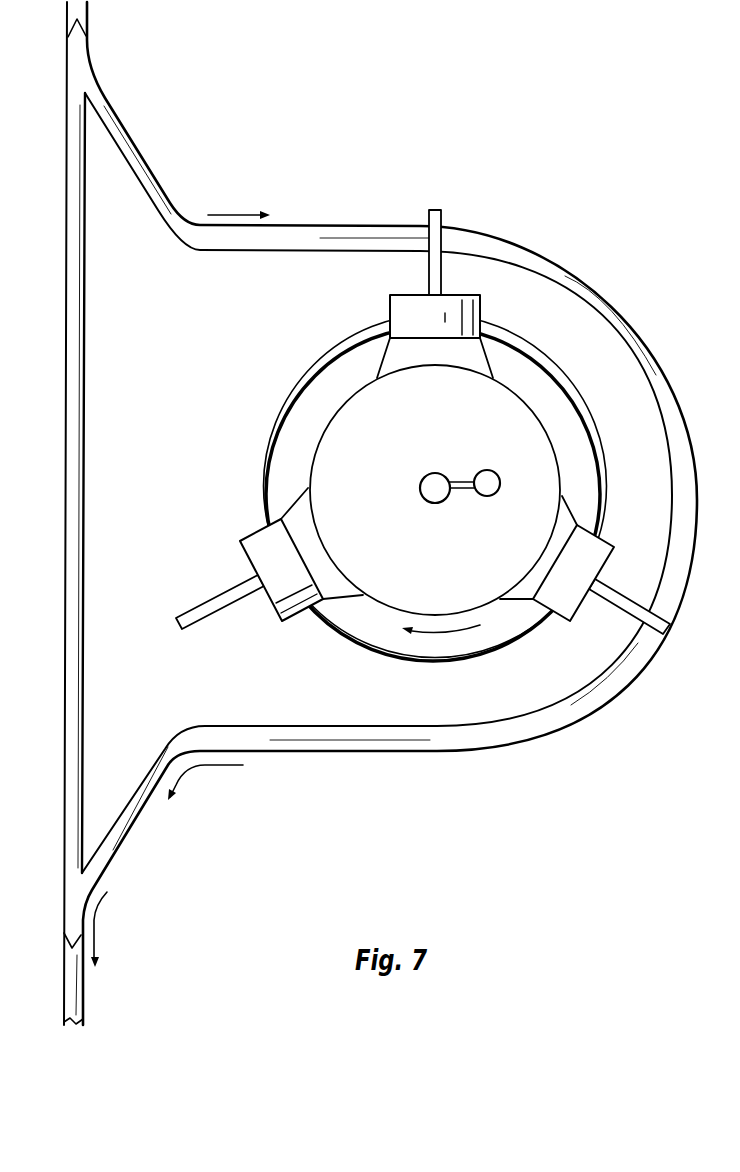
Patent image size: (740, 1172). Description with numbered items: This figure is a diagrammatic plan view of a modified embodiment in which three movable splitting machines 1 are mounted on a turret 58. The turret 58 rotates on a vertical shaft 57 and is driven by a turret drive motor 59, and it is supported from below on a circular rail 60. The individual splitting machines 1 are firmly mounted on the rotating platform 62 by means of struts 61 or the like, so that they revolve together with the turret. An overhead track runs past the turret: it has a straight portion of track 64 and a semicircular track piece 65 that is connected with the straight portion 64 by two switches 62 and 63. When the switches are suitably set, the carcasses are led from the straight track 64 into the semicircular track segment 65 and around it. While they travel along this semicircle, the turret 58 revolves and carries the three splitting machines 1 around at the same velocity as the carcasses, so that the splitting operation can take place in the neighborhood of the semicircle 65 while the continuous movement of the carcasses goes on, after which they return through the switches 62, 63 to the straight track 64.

The splitting machine 1 is at (413, 273).
The vertical shaft 57 is at (421, 488).
The turret 58 is at (378, 402).
The turret drive motor 59 is at (488, 471).
The circular rail 60 is at (266, 472).
The strut 61 is at (556, 505).
The rotating platform / switch 62 is at (90, 62).
The switch 63 is at (65, 905).
The straight portion of track 64 is at (85, 378).
The semicircular track piece 65 is at (673, 427).